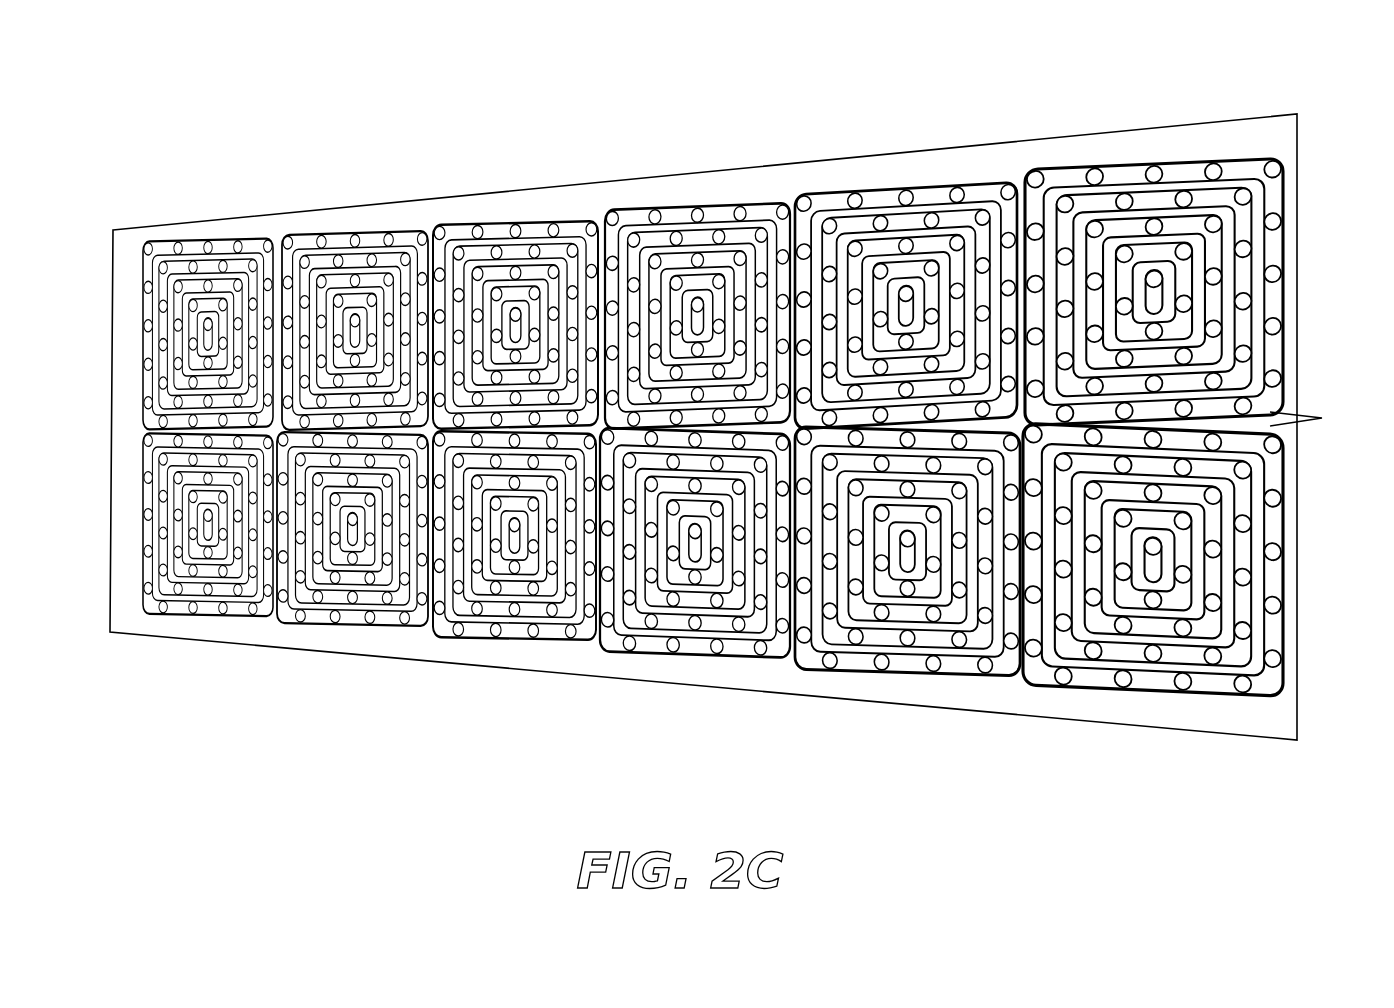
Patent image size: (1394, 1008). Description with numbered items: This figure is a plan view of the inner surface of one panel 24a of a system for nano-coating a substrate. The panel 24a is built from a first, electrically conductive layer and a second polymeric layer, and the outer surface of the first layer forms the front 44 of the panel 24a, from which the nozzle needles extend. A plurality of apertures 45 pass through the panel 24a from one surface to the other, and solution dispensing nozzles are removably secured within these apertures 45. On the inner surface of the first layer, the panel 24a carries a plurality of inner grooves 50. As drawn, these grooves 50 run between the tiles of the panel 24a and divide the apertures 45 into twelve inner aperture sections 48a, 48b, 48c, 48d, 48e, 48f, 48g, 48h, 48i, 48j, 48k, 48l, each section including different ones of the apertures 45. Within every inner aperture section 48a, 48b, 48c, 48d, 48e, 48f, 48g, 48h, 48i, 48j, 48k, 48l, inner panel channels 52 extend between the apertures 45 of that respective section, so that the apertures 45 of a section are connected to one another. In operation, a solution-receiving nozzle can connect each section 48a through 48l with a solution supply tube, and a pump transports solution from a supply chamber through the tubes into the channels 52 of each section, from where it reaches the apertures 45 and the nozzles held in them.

The panel 24a is at (700, 423).
The front 44 is at (143, 585).
The apertures 45 is at (167, 613).
The inner aperture section 48a is at (1132, 693).
The inner aperture section 48b is at (917, 675).
The inner aperture section 48c is at (690, 648).
The inner aperture section 48d is at (532, 637).
The inner aperture section 48e is at (353, 622).
The inner aperture section 48f is at (226, 616).
The inner aperture section 48g is at (243, 243).
The inner aperture section 48h is at (370, 236).
The inner aperture section 48i is at (552, 223).
The inner aperture section 48j is at (713, 208).
The inner aperture section 48k is at (900, 197).
The inner aperture section 48l is at (1112, 172).
The inner grooves 50 is at (1021, 185).
The inner panel channels 52 is at (1120, 170).